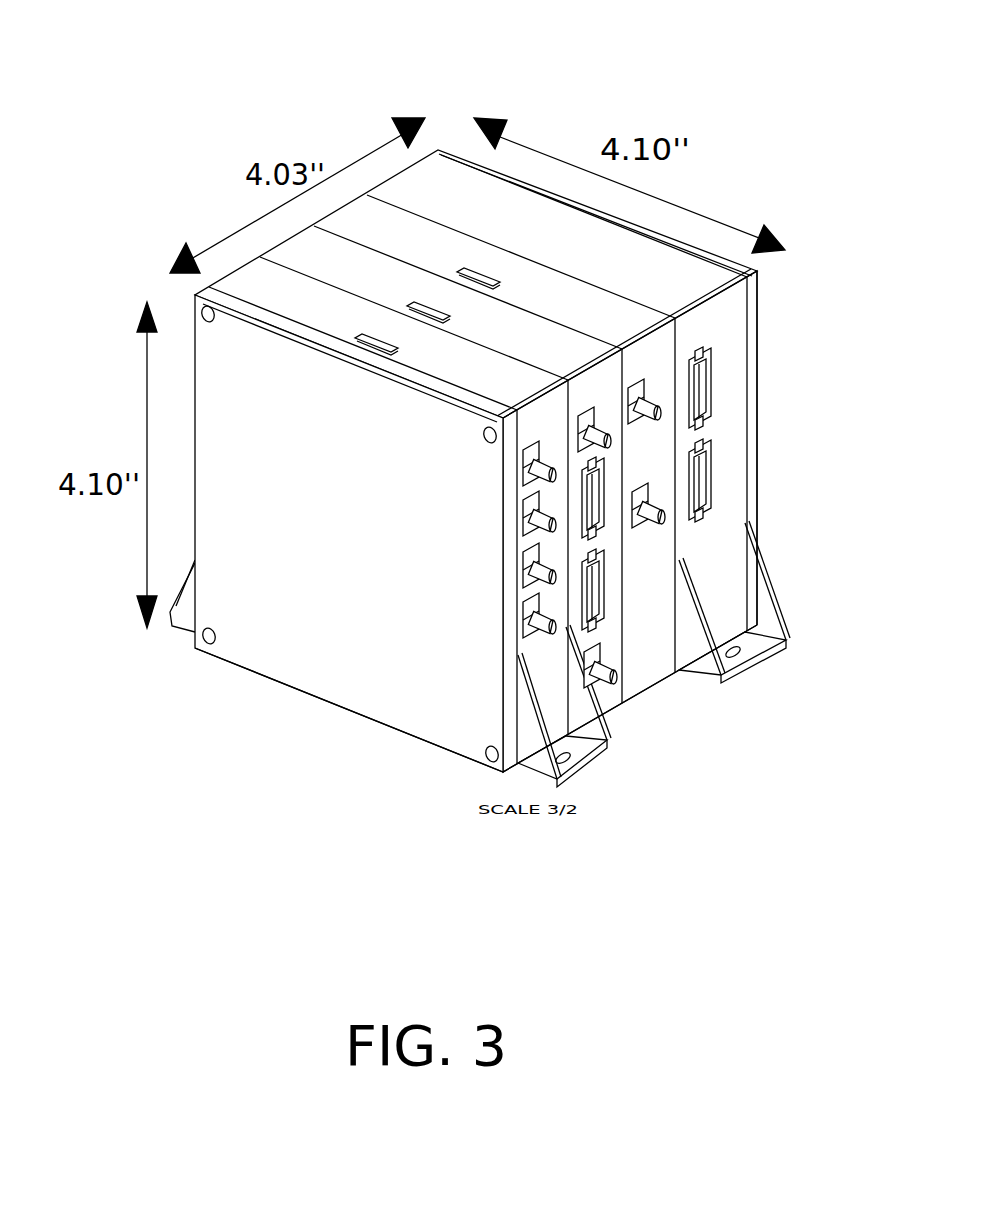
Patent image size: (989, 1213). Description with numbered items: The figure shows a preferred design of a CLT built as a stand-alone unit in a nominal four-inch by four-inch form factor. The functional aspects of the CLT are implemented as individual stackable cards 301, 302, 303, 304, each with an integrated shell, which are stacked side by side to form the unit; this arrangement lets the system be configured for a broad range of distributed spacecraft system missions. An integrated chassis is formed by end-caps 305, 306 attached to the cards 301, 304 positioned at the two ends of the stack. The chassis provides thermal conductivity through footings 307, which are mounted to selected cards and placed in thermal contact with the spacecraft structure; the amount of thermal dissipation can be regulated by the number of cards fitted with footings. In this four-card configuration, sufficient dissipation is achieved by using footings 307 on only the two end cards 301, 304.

The stackable card 301 is at (248, 275).
The stackable card 302 is at (312, 242).
The stackable card 303 is at (360, 210).
The stackable card 304 is at (422, 165).
The end-cap 305 is at (366, 688).
The end-cap 306 is at (760, 344).
The footing 307 is at (178, 627).